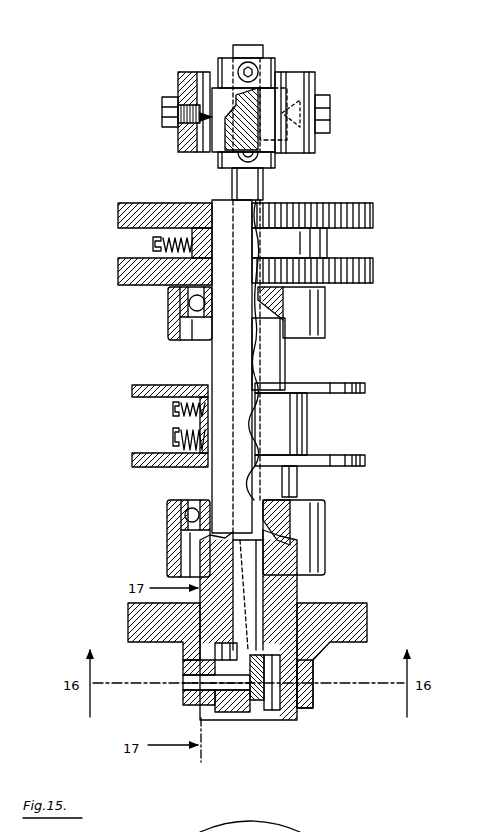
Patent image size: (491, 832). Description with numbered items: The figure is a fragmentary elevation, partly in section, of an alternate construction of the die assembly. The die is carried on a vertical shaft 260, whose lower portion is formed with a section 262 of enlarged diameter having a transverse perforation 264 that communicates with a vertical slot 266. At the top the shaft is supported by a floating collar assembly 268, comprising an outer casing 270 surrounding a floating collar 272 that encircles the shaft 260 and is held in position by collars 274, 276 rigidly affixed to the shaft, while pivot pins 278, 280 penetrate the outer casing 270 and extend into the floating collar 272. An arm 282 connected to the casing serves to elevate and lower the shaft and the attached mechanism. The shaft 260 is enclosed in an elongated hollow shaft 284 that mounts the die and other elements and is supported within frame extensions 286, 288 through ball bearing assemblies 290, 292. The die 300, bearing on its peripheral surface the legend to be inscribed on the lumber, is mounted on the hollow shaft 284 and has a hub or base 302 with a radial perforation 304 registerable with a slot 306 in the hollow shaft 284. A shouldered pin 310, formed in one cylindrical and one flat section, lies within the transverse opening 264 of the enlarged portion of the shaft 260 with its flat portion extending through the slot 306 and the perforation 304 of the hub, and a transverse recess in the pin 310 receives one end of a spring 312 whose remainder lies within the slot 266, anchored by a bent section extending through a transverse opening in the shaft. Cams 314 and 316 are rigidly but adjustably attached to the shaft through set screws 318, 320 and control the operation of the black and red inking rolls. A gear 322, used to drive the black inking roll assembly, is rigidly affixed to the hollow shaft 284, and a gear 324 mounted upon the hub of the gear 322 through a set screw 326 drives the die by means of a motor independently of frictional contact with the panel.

The vertical shaft 260 is at (253, 181).
The section of enlarged diameter 262 is at (300, 672).
The transverse perforation 264 is at (270, 710).
The vertical slot 266 is at (255, 700).
The floating collar assembly 268 is at (336, 68).
The outer casing 270 is at (315, 80).
The floating collar 272 is at (205, 88).
The collar 274 is at (218, 58).
The collar 276 is at (218, 163).
The pivot pin 278 is at (330, 108).
The pivot pin 280 is at (177, 108).
The arm 282 is at (258, 100).
The hollow shaft 284 is at (225, 200).
The frame extension 286 is at (283, 300).
The frame extension 288 is at (280, 510).
The ball bearing assembly 290 is at (172, 297).
The ball bearing assembly 292 is at (170, 512).
The die 300 is at (367, 603).
The hub or base 302 is at (183, 698).
The radial perforation 304 is at (185, 680).
The slot 306 is at (190, 662).
The pin 310 is at (215, 705).
The spring 312 is at (215, 648).
The cam 314 is at (365, 460).
The cam 316 is at (365, 388).
The set screw 318 is at (173, 440).
The set screw 320 is at (173, 410).
The gear 322 is at (373, 283).
The gear 324 is at (373, 228).
The set screw 326 is at (153, 243).